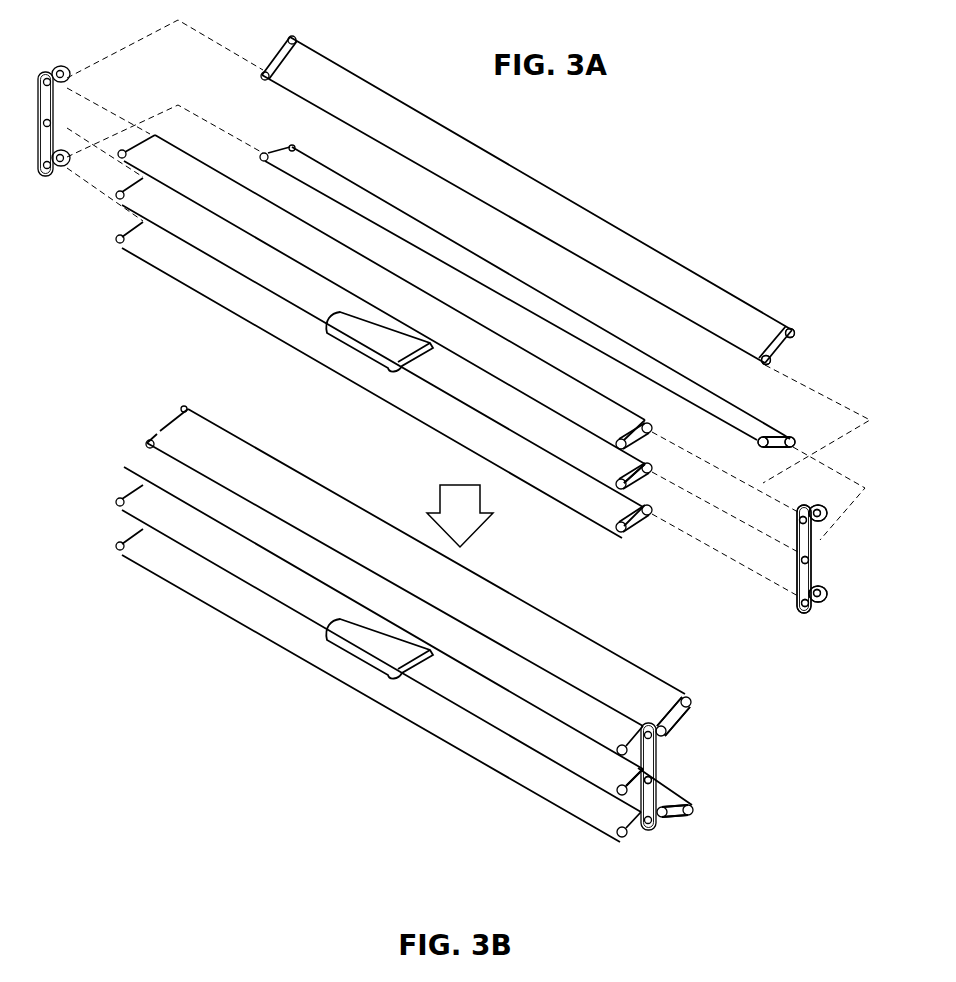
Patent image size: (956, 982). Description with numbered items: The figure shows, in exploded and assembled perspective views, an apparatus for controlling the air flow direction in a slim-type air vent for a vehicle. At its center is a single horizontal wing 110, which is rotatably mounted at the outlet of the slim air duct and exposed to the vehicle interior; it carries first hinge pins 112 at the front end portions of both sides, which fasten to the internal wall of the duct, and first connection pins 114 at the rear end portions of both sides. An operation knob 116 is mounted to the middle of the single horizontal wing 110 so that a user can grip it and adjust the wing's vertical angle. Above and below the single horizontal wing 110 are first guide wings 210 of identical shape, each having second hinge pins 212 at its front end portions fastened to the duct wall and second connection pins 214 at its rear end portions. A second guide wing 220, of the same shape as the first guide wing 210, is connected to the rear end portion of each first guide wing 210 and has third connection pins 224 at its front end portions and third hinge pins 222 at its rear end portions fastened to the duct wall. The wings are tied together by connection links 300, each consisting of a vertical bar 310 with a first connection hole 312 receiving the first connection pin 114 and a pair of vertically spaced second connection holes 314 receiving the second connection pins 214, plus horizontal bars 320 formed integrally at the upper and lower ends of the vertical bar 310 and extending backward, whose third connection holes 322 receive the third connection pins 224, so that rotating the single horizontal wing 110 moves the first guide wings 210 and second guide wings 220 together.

In FIG. 3A, the single horizontal wing 110 is at (198, 240).
In FIG. 3B, the single horizontal wing 110 is at (285, 618).
In FIG. 3A, the first hinge pins 112 is at (607, 487).
In FIG. 3B, the first hinge pins 112 is at (627, 788).
In FIG. 3A, the first connection pins 114 is at (661, 475).
In FIG. 3B, the first connection pins 114 is at (657, 777).
In FIG. 3A, the operation knob 116 is at (358, 343).
In FIG. 3B, the operation knob 116 is at (357, 655).
In FIG. 3A, the first guide wings 210 is at (255, 252).
In FIG. 3B, the first guide wings 210 is at (208, 535).
In FIG. 3A, the second hinge pins 212 is at (616, 436).
In FIG. 3B, the second hinge pins 212 is at (618, 756).
In FIG. 3A, the second connection pins 214 is at (656, 428).
In FIG. 3B, the second connection pins 214 is at (650, 722).
In FIG. 3A, the second guide wing 220 is at (571, 195).
In FIG. 3B, the second guide wing 220 is at (308, 466).
In FIG. 3A, the third hinge pins 222 is at (797, 333).
In FIG. 3B, the third hinge pins 222 is at (693, 702).
In FIG. 3A, the third connection pins 224 is at (773, 358).
In FIG. 3B, the third connection pins 224 is at (670, 730).
In FIG. 3A, the connection links 300 is at (793, 620).
In FIG. 3B, the connection links 300 is at (652, 842).
In FIG. 3A, the vertical bar 310 is at (811, 578).
In FIG. 3A, the first connection hole 312 is at (809, 560).
In FIG. 3A, the second connection holes 314 is at (811, 532).
In FIG. 3A, the horizontal bars 320 is at (824, 520).
In FIG. 3A, the third connection holes 322 is at (823, 513).